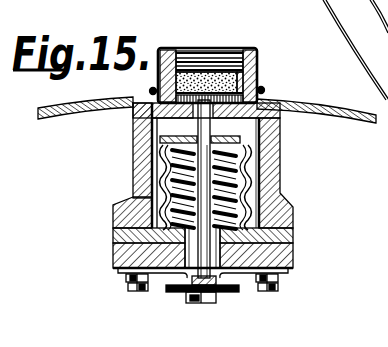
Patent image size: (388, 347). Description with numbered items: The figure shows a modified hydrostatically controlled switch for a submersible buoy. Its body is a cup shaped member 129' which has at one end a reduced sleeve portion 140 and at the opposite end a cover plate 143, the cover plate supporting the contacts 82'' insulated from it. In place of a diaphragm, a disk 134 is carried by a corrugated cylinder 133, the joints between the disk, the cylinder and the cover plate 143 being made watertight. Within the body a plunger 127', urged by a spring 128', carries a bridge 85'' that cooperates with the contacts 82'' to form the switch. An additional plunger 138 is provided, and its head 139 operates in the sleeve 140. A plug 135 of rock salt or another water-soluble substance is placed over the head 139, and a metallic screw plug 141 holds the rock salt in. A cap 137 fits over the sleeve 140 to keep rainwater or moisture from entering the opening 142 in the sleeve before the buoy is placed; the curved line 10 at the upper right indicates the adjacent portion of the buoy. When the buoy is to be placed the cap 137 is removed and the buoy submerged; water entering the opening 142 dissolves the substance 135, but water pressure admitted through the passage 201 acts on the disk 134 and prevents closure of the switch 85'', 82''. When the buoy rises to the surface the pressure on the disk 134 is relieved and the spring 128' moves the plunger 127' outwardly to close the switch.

The wheel rim 10 is at (367, 74).
The cap 137 is at (258, 51).
The metallic screw plug 141 is at (232, 52).
The reduced sleeve portion 140 is at (176, 58).
The opening 142 is at (259, 73).
The head 139 is at (264, 88).
The plug of rock salt 135 is at (160, 82).
The additional plunger 138 is at (292, 103).
The corrugated cylinder 133 is at (156, 163).
The cup shaped member 129' is at (116, 204).
The disk 134 is at (277, 135).
The passage 201 is at (197, 128).
The spring 128' is at (226, 132).
The cover plate 143 is at (293, 234).
The plunger 127' is at (173, 206).
The bridge 85'' is at (214, 300).
The contacts 82'' is at (203, 283).